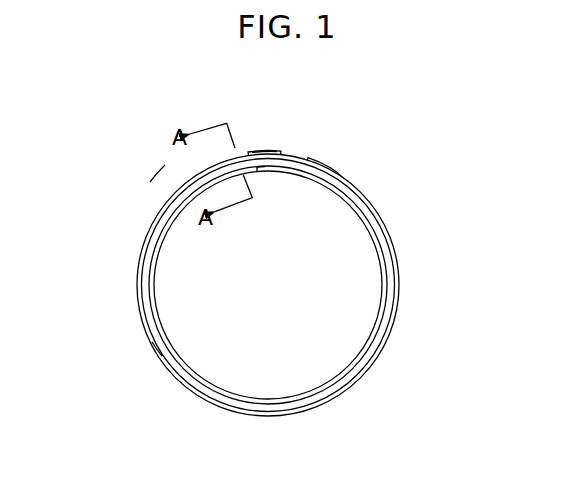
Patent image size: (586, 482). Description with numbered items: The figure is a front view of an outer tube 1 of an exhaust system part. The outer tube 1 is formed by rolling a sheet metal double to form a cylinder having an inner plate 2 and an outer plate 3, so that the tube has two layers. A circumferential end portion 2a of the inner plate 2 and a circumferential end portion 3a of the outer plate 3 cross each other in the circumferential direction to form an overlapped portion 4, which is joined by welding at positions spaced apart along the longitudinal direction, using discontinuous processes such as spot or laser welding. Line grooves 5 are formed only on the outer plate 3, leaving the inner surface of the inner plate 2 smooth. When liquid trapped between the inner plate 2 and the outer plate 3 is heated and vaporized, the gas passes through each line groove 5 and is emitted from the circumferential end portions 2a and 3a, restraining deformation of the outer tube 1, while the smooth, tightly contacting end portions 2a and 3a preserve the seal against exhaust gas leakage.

The outer tube 1 is at (158, 176).
The inner plate 2 is at (155, 252).
The circumferential end portion of the inner plate 2a is at (263, 172).
The outer plate 3 is at (388, 336).
The circumferential end portion of the outer plate 3a is at (283, 156).
The overlapped portion 4 is at (265, 152).
The line groove 5 is at (157, 349).